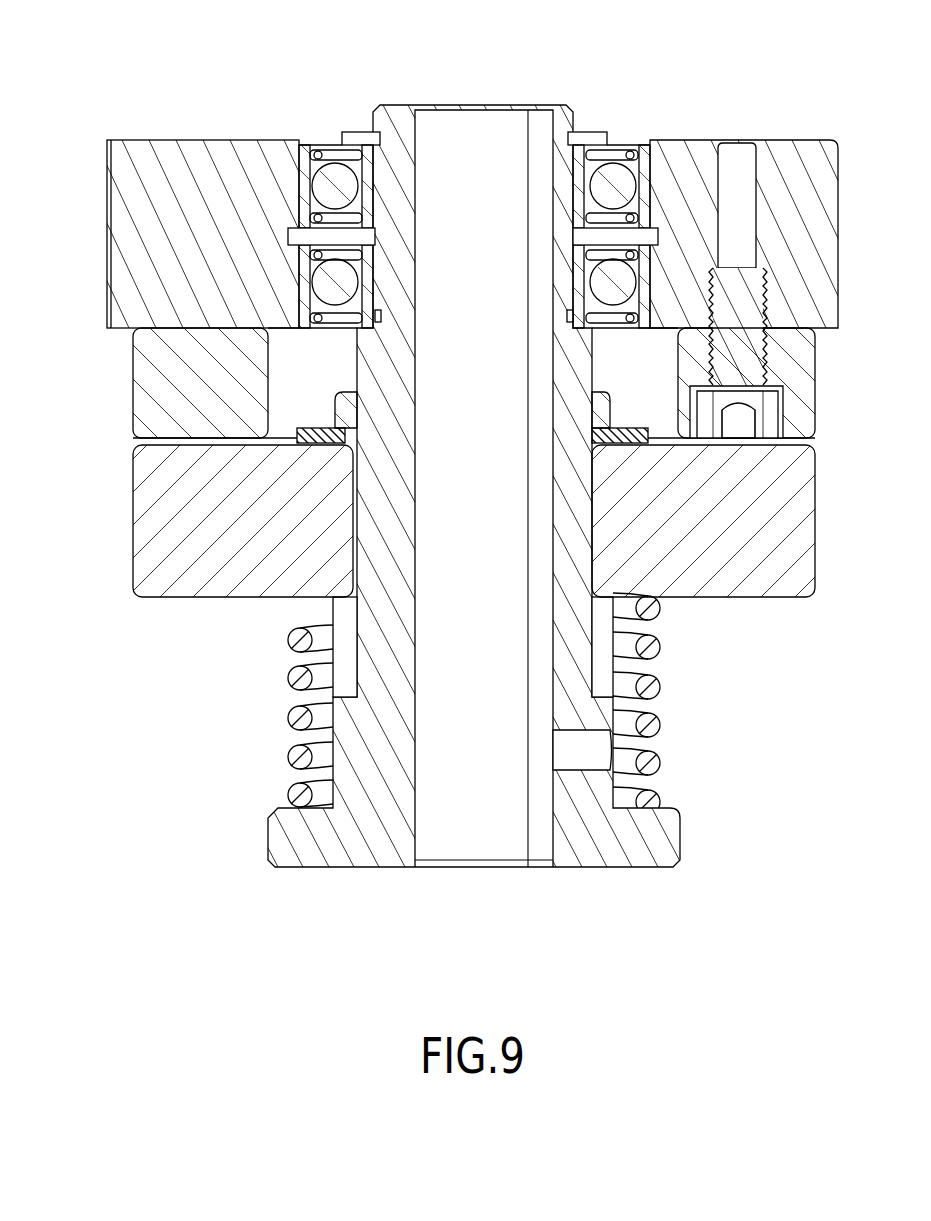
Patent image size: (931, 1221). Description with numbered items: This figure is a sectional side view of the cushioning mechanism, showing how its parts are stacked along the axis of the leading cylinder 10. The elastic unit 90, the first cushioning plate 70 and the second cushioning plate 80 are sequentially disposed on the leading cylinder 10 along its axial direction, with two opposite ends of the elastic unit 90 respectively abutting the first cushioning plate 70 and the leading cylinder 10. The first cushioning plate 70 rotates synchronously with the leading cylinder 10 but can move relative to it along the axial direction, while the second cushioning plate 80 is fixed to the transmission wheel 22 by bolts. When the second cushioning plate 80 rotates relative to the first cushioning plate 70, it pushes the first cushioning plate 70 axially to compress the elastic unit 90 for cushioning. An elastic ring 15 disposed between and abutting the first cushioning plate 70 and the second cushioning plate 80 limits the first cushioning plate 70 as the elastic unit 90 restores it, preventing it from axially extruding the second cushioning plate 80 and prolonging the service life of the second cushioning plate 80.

The leading cylinder 10 is at (662, 841).
The elastic ring 15 is at (323, 430).
The transmission wheel 22 is at (210, 175).
The first cushioning plate 70 is at (114, 513).
The second cushioning plate 80 is at (117, 395).
The elastic unit 90 is at (652, 727).